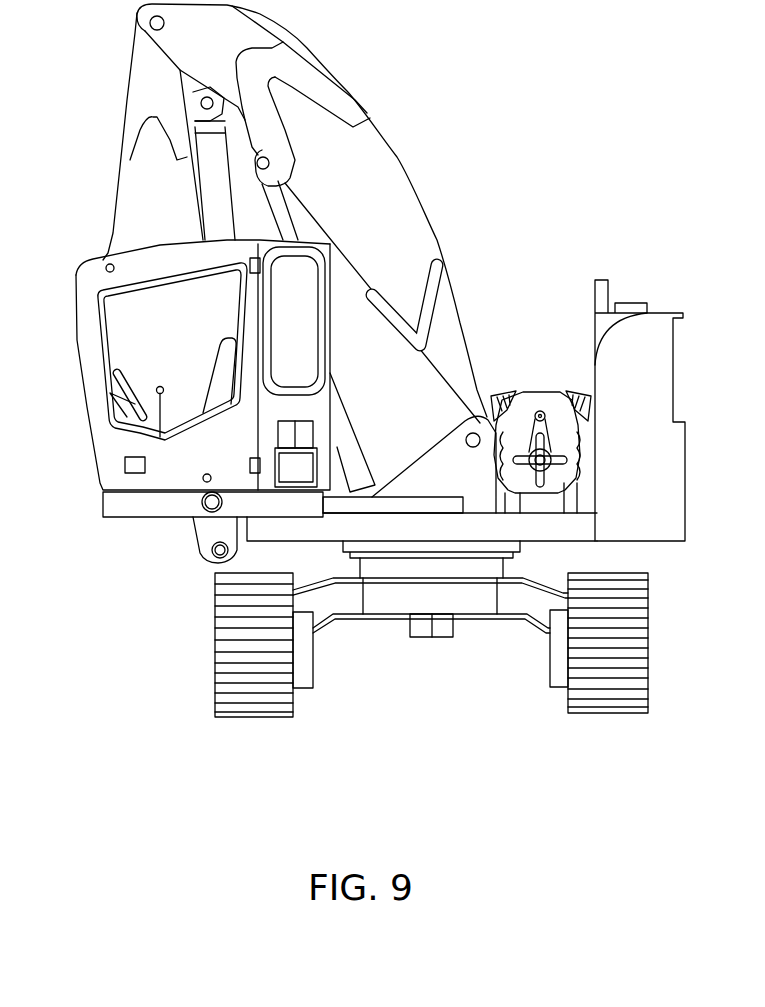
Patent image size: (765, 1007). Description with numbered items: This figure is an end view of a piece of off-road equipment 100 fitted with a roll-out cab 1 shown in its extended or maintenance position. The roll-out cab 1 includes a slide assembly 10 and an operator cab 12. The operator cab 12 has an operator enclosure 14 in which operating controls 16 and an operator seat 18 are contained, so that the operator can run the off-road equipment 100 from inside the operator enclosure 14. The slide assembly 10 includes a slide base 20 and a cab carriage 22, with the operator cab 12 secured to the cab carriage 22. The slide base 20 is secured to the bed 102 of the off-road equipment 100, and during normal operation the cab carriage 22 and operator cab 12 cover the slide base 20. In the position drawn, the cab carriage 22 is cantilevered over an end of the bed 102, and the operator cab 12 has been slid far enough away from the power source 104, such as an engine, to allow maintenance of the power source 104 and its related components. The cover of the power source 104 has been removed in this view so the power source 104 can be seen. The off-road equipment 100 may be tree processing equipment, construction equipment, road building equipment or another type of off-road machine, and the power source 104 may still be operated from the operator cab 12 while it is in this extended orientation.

The roll-out cab 1 is at (79, 532).
The slide assembly 10 is at (181, 527).
The operator cab 12 is at (91, 246).
The operator enclosure 14 is at (90, 457).
The operating controls 16 is at (157, 390).
The operator seat 18 is at (223, 353).
The slide base 20 is at (432, 490).
The cab carriage 22 is at (131, 526).
The off-road equipment 100 is at (473, 173).
The bed 102 is at (302, 530).
The power source 104 is at (548, 380).